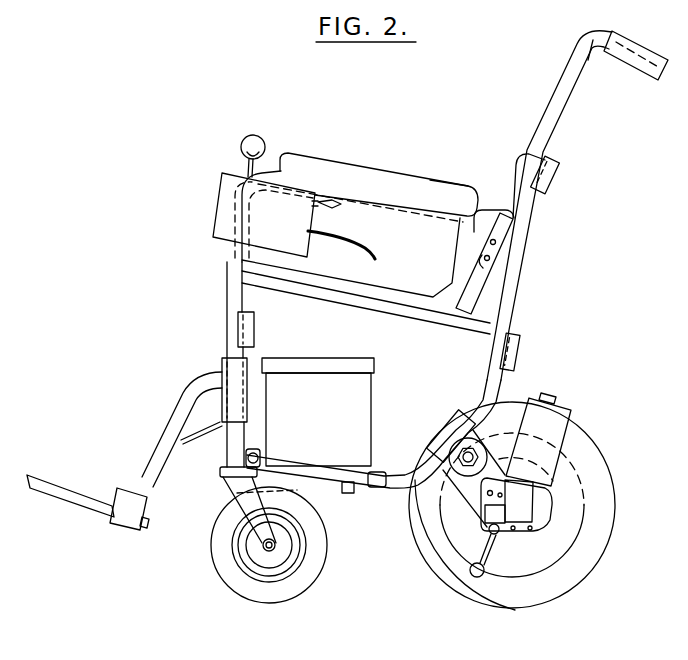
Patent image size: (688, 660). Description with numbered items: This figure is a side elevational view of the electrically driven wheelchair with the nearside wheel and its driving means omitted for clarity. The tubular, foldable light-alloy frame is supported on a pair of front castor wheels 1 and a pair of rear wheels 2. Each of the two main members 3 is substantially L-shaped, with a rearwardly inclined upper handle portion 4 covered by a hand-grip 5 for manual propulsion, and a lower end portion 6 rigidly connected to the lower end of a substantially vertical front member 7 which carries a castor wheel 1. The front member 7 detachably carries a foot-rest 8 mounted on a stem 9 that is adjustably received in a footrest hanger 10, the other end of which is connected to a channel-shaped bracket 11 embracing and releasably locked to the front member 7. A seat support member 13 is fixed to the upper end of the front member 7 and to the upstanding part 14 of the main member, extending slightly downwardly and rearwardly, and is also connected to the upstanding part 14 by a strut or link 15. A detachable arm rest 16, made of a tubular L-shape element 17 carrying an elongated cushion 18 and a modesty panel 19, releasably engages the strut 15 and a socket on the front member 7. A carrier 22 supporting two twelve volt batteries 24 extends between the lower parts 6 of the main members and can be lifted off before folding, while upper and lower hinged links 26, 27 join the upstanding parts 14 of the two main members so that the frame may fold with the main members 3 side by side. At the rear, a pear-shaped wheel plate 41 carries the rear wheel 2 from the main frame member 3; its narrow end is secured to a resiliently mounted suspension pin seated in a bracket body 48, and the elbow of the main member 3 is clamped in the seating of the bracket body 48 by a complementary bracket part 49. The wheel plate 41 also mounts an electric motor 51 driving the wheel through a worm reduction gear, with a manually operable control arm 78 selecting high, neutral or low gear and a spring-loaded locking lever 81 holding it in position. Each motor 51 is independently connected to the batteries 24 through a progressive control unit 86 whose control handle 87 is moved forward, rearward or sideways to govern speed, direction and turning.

The front castor wheel 1 is at (312, 555).
The rear wheel 2 is at (616, 518).
The main member 3 is at (486, 379).
The upper handle portion 4 is at (592, 62).
The hand-grip 5 is at (657, 78).
The lower end portion 6 is at (250, 449).
The front member 7 is at (226, 337).
The foot-rest 8 is at (72, 495).
The stem 9 is at (137, 487).
The footrest hanger 10 is at (185, 408).
The channel-shaped bracket 11 is at (237, 377).
The seat support member 13 is at (308, 285).
The upstanding part 14 is at (516, 258).
The strut or link 15 is at (477, 288).
The arm rest 16 is at (366, 157).
The tubular L-shape element 17 is at (474, 217).
The elongated cushion 18 is at (447, 187).
The modesty panel 19 is at (403, 253).
The carrier 22 is at (349, 493).
The battery 24 is at (359, 418).
The upper hinged link 26 is at (553, 185).
The lower hinged link 27 is at (519, 350).
The wheel plate 41 is at (474, 487).
The bracket body 48 is at (474, 434).
The bracket part 49 is at (444, 437).
The electric motor 51 is at (534, 408).
The control arm 78 is at (501, 588).
The locking lever 81 is at (484, 532).
The progressive control unit 86 is at (218, 230).
The control handle 87 is at (252, 136).